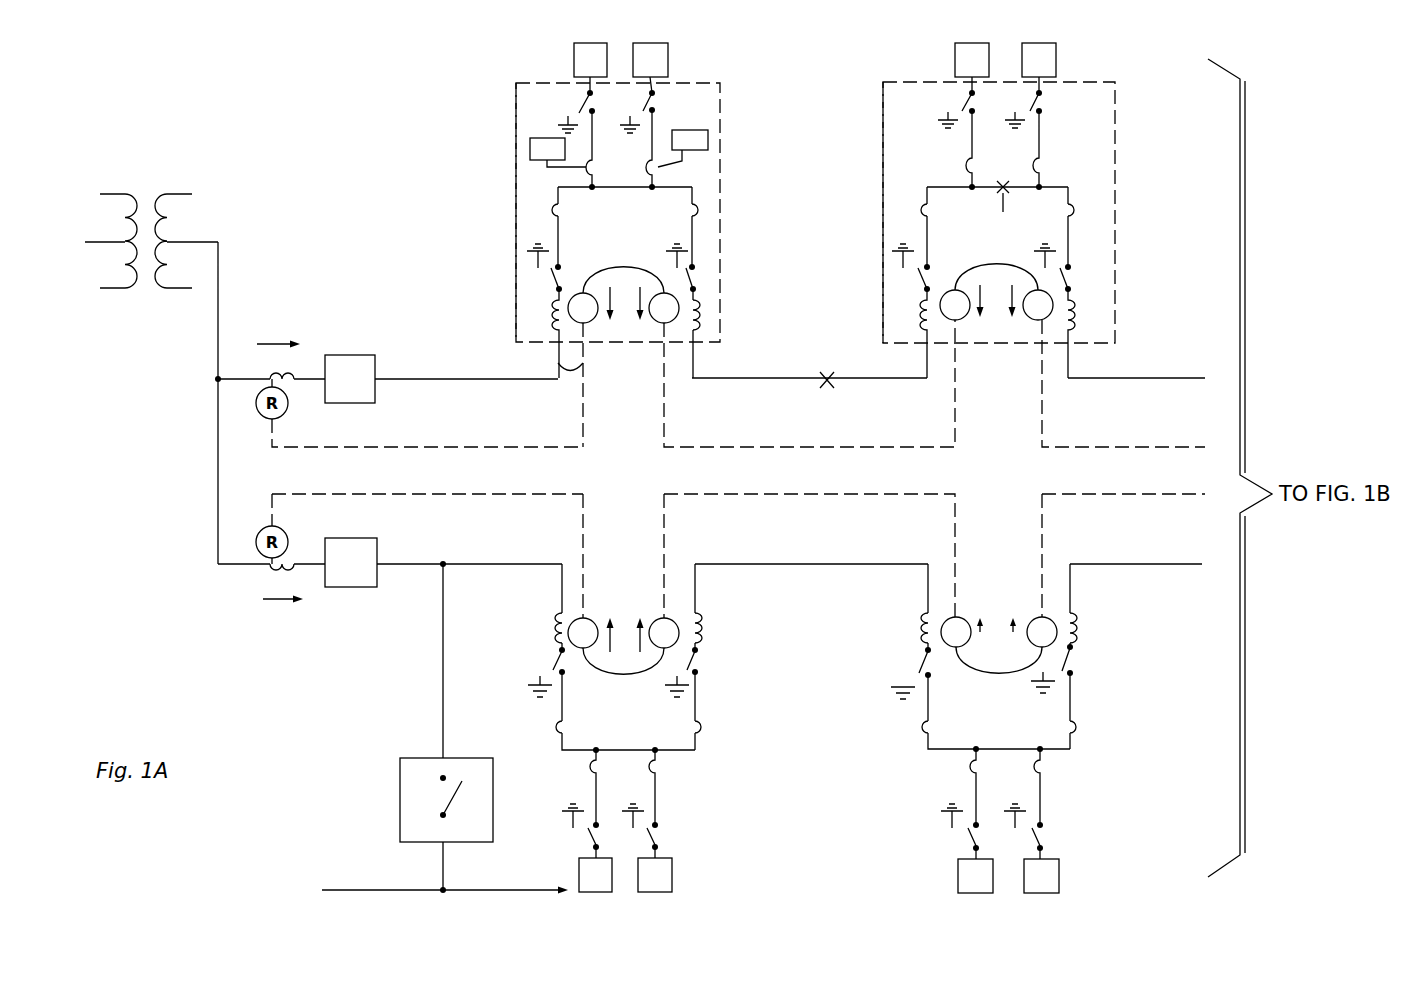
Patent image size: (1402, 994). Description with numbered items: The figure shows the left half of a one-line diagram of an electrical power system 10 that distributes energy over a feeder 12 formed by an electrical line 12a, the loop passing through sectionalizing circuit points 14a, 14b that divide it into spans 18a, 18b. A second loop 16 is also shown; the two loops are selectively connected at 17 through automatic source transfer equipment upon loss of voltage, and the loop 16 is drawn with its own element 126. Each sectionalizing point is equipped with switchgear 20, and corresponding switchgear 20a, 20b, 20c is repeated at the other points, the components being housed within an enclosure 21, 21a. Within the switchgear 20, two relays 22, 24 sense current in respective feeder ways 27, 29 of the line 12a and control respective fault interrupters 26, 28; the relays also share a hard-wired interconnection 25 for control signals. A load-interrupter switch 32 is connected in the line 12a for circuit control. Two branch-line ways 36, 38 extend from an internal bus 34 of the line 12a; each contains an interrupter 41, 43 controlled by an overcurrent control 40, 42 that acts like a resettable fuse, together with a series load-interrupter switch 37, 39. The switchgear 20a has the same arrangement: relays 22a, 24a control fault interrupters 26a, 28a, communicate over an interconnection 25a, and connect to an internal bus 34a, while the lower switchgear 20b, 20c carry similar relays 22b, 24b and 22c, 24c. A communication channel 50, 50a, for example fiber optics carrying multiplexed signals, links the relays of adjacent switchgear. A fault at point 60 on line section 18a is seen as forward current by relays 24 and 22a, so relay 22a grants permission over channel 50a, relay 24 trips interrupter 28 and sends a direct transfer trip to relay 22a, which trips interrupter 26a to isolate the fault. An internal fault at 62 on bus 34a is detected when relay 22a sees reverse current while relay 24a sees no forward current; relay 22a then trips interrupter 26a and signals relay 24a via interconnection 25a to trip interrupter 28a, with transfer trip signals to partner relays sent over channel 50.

The electrical power system 10 is at (136, 636).
The feeder 12 is at (397, 350).
The electrical line 12a is at (384, 370).
The sectionalizing circuit point 14a is at (476, 186).
The sectionalizing circuit point 14b is at (1128, 291).
The second loop 16 is at (355, 890).
The loop connection point 17 is at (419, 756).
The line section 18a is at (889, 380).
The span 18b is at (1171, 378).
The switchgear 20 is at (721, 83).
The switchgear 20a is at (1101, 82).
The relay block 20b is at (713, 724).
The relay block 20c is at (1090, 727).
The enclosure 21 is at (516, 163).
The module boundary 21a is at (883, 102).
The relay 22 is at (577, 323).
The relay 22a is at (946, 292).
The left relay 22b is at (576, 623).
The left relay 22c is at (933, 621).
The relay 24 is at (658, 324).
The relay 24a is at (1030, 321).
The right relay 24b is at (657, 619).
The right relay 24c is at (1043, 617).
The hard-wired interconnection 25 is at (624, 266).
The interconnection arrangement 25a is at (1002, 262).
The fault interrupter 26 is at (552, 209).
The fault interrupter 26a is at (921, 210).
The feeder way 27 is at (583, 364).
The fault interrupter 28 is at (699, 209).
The fault interrupter 28a is at (1075, 210).
The feeder way 29 is at (690, 336).
The load-interrupter switch 32 is at (696, 286).
The internal bus 34 is at (678, 187).
The internal bus 34a is at (948, 187).
The branch-line way 36 is at (593, 130).
The load-interrupter switch 37 is at (584, 104).
The branch-line way 38 is at (655, 115).
The load-interrupter switch 39 is at (647, 105).
The overcurrent control 40 is at (531, 145).
The interrupter 41 is at (595, 172).
The overcurrent control 42 is at (709, 140).
The interrupter 43 is at (652, 168).
The communication channel 50 is at (407, 440).
The communication channel 50a is at (690, 446).
The fault point 60 is at (829, 388).
The internal fault 62 is at (1003, 209).
The second control unit 126 is at (406, 566).